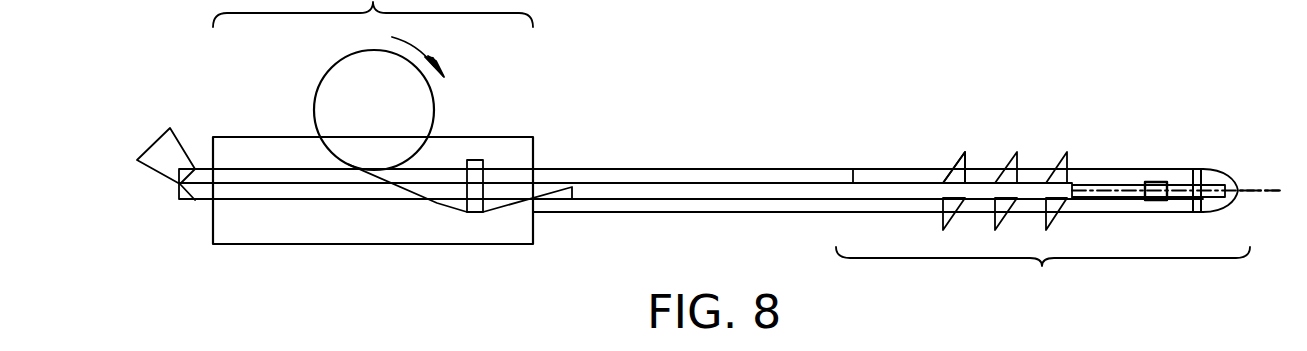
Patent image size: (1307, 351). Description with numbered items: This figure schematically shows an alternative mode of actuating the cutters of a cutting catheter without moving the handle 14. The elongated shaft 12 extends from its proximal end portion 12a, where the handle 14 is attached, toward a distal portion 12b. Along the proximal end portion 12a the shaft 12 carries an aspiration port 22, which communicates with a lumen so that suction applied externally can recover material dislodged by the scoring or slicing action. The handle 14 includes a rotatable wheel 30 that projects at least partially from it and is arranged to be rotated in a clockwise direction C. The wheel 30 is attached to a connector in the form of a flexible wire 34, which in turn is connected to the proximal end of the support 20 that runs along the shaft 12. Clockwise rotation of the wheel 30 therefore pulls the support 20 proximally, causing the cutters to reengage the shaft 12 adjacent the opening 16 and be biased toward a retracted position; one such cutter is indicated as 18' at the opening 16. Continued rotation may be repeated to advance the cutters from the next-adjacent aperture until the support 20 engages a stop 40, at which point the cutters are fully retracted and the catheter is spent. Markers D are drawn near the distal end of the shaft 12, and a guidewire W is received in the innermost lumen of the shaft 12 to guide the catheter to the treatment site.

The shaft 12 is at (740, 169).
The proximal end portion 12a is at (373, 175).
The distal portion 12b is at (1043, 273).
The handle 14 is at (488, 137).
The opening 16 is at (955, 167).
The fin 18' is at (983, 141).
The support 20 is at (827, 200).
The aspiration port 22 is at (153, 143).
The rotatable wheel 30 is at (320, 83).
The flexible wire 34 is at (450, 208).
The stop 40 is at (475, 213).
The clockwise direction C is at (415, 45).
The marker D is at (1157, 182).
The guidewire W is at (1263, 187).